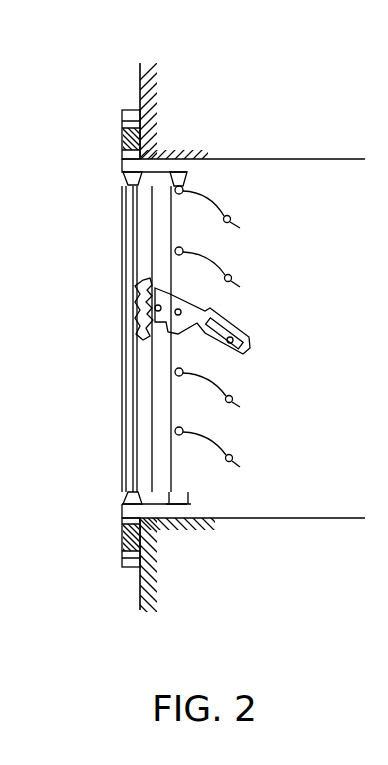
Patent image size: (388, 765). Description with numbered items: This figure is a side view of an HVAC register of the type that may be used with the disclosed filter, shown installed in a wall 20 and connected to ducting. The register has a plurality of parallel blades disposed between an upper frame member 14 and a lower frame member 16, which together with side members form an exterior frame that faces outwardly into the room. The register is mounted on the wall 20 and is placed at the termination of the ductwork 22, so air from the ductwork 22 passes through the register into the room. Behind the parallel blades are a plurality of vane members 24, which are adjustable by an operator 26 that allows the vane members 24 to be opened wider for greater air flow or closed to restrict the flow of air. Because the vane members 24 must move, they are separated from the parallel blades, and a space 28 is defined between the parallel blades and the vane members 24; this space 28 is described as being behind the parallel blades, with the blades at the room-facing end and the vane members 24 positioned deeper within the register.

The upper frame member 14 is at (120, 140).
The lower frame member 16 is at (120, 542).
The wall 20 is at (226, 98).
The ductwork 22 is at (340, 327).
The vane members 24 is at (244, 223).
The operator 26 is at (250, 348).
The space 28 is at (148, 484).